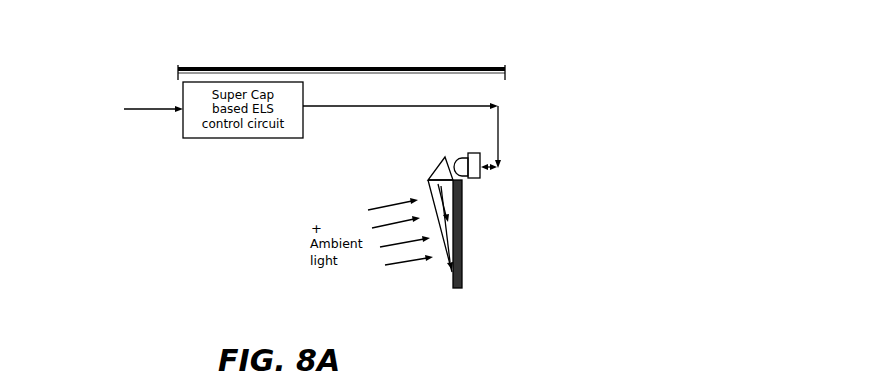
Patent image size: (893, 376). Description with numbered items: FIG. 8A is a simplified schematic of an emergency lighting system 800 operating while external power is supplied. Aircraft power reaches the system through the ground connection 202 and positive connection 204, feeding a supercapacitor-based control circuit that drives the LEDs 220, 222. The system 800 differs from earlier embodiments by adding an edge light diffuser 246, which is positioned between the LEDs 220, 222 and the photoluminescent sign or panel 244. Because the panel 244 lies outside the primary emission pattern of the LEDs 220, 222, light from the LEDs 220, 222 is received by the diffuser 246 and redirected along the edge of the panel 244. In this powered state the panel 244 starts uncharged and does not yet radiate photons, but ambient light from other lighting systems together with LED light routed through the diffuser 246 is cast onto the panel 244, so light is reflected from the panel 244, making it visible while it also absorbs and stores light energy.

The ground connection 202 is at (105, 75).
The positive connection 204 is at (45, 102).
The emergency lighting system 800 is at (295, 67).
The LED 220 is at (533, 156).
The LED 222 is at (481, 154).
The edge light diffuser 246 is at (437, 178).
The photoluminescent sign or panel 244 is at (463, 260).